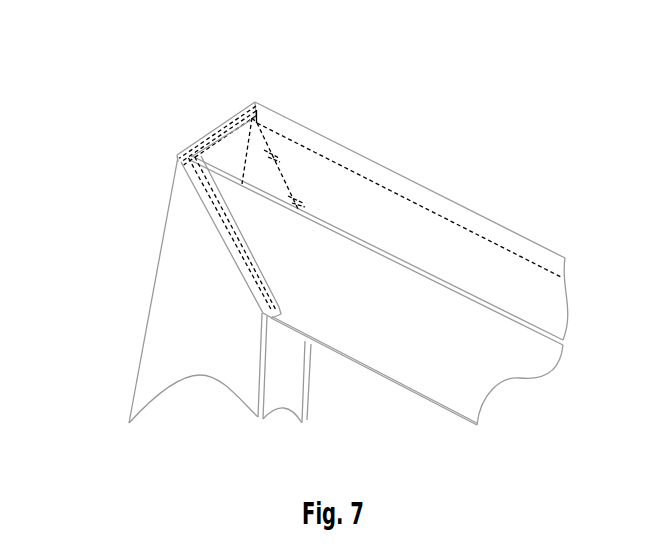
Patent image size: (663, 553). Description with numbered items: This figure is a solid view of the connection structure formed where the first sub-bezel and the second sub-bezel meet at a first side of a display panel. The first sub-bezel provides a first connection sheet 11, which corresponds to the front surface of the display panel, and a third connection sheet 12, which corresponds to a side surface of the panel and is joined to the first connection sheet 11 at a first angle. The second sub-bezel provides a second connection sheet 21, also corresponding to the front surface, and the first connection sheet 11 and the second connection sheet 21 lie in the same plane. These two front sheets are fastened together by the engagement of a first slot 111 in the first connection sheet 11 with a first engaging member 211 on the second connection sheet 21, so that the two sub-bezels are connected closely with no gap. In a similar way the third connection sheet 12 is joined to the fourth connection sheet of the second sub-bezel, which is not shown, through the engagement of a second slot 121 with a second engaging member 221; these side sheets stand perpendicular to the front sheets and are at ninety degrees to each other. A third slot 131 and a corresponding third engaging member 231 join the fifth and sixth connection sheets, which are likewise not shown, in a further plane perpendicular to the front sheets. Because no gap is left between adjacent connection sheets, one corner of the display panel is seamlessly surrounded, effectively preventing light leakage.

The first connection sheet 11 is at (466, 363).
The third connection sheet 12 is at (473, 242).
The second connection sheet 21 is at (201, 344).
The first slot 111 is at (149, 237).
The first engaging member 211 is at (210, 219).
The second slot 121 is at (147, 105).
The second engaging member 221 is at (198, 127).
The third slot 131 is at (402, 151).
The third engaging member 231 is at (279, 141).